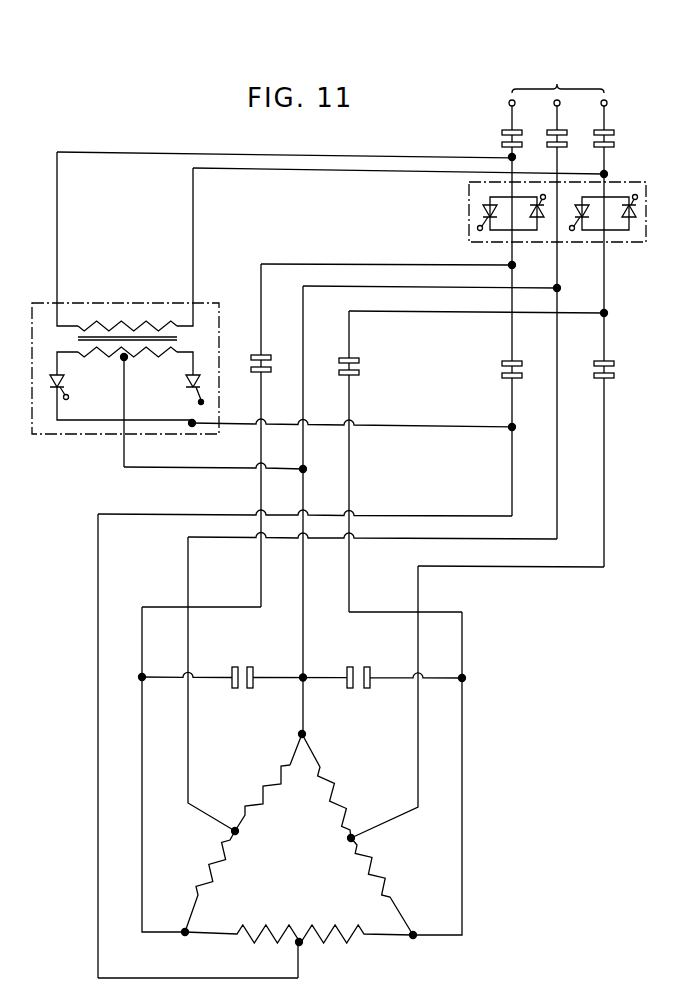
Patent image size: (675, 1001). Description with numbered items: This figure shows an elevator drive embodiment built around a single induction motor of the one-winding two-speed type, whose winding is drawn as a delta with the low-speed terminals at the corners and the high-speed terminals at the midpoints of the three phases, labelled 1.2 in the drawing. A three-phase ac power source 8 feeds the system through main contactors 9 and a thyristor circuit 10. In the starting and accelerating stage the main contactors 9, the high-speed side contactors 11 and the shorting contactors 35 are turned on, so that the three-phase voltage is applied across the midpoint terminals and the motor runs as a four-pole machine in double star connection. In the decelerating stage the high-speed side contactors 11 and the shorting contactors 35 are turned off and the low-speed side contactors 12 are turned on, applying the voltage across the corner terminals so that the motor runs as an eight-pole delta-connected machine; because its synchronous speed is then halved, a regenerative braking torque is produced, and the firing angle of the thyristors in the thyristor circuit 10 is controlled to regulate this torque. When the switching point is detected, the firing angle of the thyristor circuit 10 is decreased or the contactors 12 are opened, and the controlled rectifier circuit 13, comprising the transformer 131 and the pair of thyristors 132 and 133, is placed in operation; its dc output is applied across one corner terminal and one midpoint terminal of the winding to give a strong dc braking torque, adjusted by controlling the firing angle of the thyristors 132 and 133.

The three-phase ac power source 8 is at (558, 92).
The main contactors 9 is at (502, 139).
The thyristor circuit 10 is at (469, 184).
The high-speed side contactors 11 is at (502, 368).
The low-speed side contactors 12 is at (359, 367).
The controlled rectifier circuit 13 is at (128, 385).
The transformer 131 is at (173, 341).
The thyristor 132 is at (64, 383).
The thyristor 133 is at (186, 383).
The shorting contactors 35 is at (241, 667).
The motor winding (delta) 1.2 is at (294, 849).